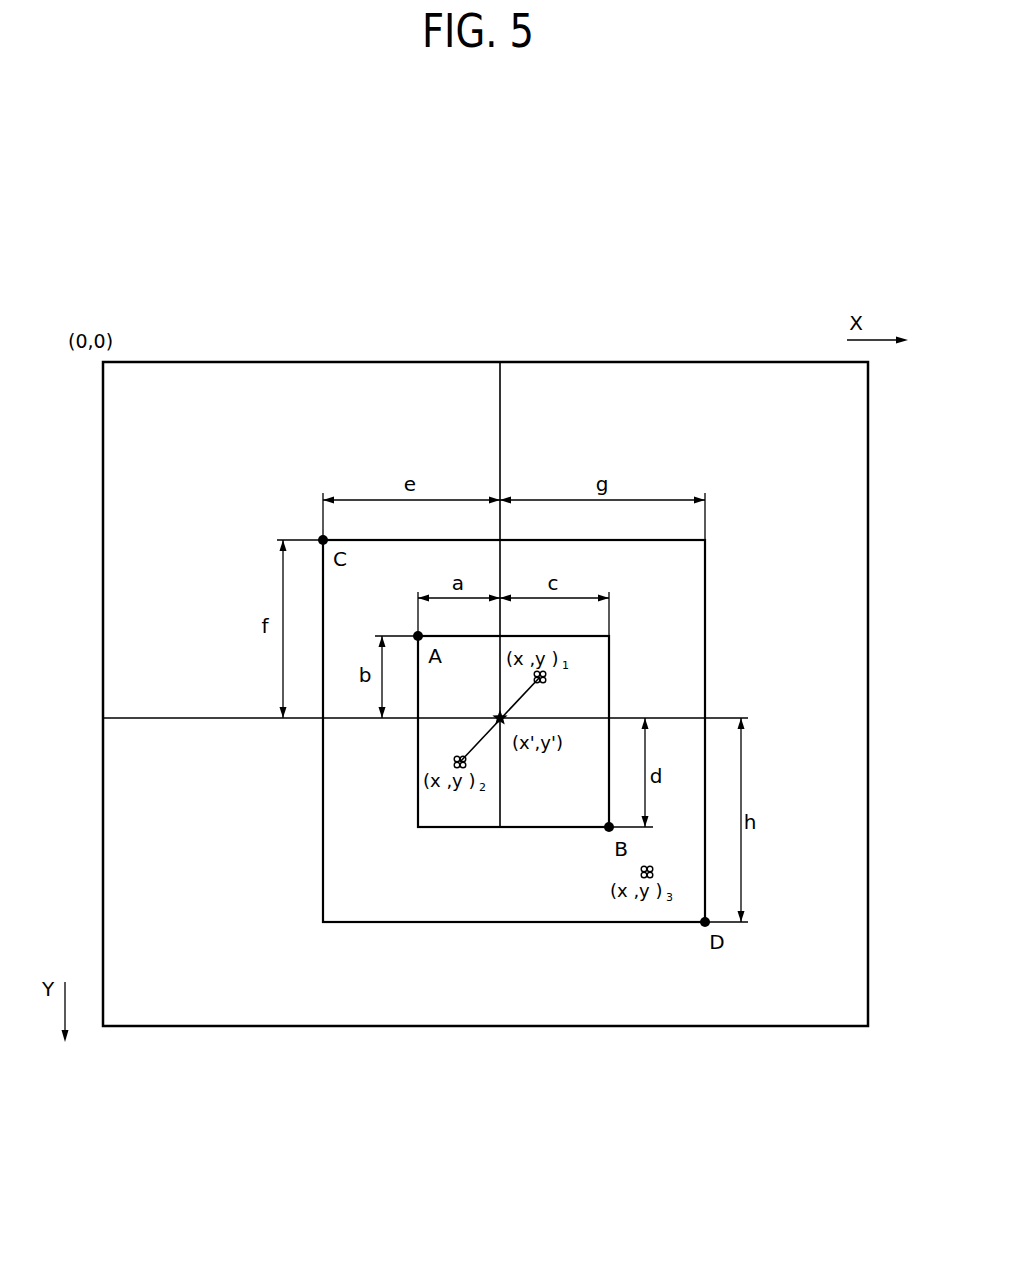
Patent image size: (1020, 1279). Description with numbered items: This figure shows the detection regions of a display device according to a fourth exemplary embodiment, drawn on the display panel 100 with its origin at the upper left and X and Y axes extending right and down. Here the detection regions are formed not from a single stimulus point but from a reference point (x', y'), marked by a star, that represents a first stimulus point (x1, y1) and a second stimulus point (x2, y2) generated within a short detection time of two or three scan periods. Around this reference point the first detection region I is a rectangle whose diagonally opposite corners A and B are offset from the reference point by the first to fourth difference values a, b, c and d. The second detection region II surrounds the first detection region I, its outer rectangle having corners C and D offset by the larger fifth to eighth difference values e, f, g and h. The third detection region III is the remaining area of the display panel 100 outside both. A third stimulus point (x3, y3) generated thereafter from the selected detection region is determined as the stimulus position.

The display panel 100 is at (662, 289).
The first detection region I is at (508, 827).
The second detection region II is at (377, 922).
The third detection region III is at (640, 1026).